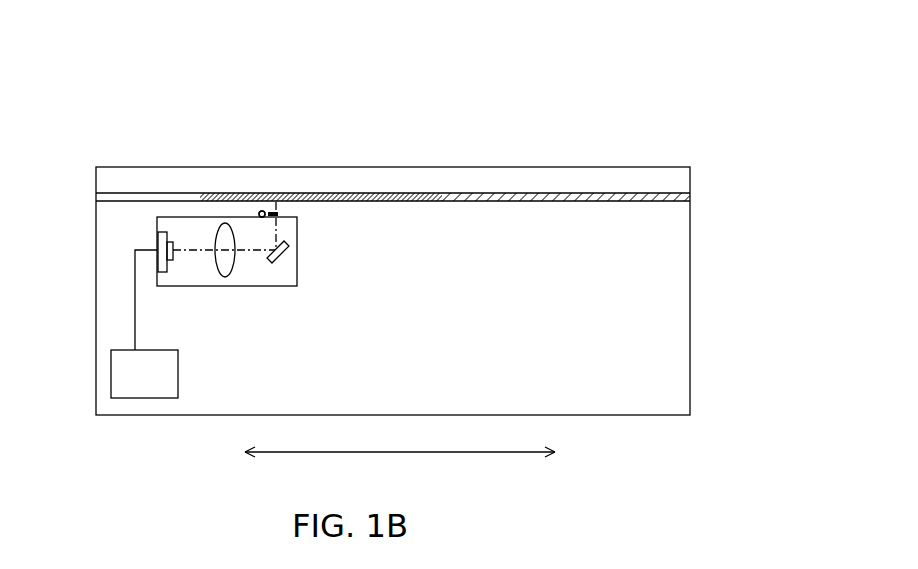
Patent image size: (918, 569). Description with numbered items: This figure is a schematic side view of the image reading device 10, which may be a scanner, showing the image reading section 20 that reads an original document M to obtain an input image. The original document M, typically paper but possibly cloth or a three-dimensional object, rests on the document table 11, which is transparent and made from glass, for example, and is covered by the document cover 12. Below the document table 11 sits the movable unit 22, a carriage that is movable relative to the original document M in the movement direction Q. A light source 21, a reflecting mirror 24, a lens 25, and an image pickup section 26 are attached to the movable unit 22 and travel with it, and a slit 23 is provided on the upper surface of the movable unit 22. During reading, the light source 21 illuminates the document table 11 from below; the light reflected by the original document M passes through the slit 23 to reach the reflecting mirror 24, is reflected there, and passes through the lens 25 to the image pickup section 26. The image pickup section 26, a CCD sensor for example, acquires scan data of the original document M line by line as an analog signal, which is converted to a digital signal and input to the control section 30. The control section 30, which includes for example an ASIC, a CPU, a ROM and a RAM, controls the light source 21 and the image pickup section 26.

The image reading device 10 is at (521, 101).
The document table 11 is at (683, 191).
The document cover 12 is at (565, 167).
The original document M is at (443, 193).
The image reading section 20 is at (283, 233).
The light source 21 is at (262, 210).
The movable unit 22 is at (297, 274).
The slit 23 is at (282, 214).
The reflecting mirror 24 is at (275, 268).
The lens 25 is at (222, 278).
The image pickup section 26 is at (165, 286).
The control section 30 is at (178, 370).
The movement direction Q is at (400, 466).